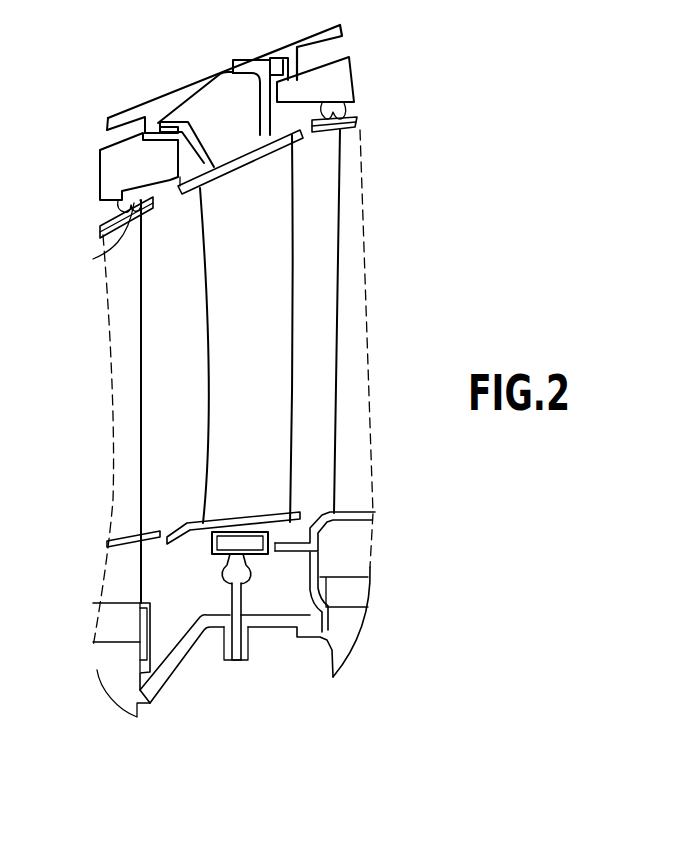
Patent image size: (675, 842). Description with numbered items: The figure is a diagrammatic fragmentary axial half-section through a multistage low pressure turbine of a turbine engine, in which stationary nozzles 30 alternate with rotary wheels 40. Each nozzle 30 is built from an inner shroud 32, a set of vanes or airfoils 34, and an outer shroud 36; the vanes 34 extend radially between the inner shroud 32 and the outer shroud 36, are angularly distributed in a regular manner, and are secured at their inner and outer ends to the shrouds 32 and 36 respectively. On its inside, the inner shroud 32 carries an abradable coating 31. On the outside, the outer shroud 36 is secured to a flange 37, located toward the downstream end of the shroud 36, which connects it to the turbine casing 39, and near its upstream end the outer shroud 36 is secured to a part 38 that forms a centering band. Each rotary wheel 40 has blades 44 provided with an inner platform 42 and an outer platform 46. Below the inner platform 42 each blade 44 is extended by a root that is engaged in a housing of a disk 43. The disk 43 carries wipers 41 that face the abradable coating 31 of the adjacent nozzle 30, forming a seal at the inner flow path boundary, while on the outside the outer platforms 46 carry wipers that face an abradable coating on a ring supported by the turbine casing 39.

The stationary nozzle 30 is at (256, 333).
The abradable coating 31 is at (248, 540).
The inner shroud 32 is at (228, 526).
The vane 34 is at (228, 406).
The outer shroud 36 is at (272, 143).
The flange 37 is at (261, 103).
The centering band part 38 is at (200, 138).
The turbine casing 39 is at (122, 162).
The rotary wheel 40 is at (126, 304).
The wiper 41 is at (247, 557).
The inner platform 42 is at (145, 533).
The disk 43 is at (120, 666).
The blade 44 is at (123, 358).
The outer platform 46 is at (110, 237).